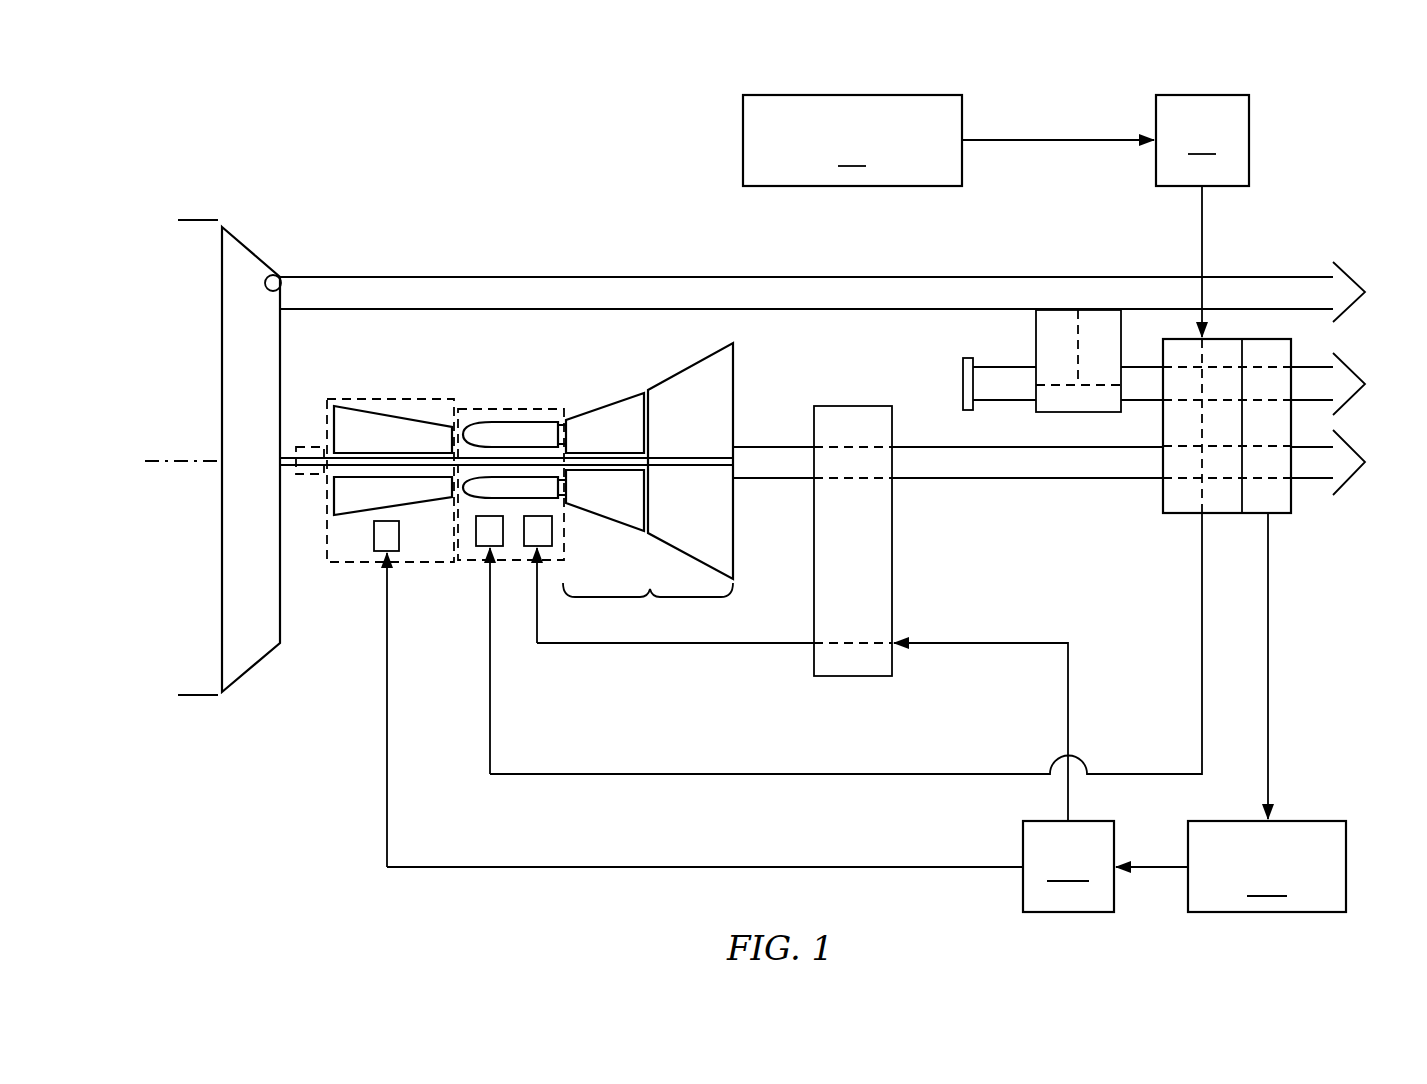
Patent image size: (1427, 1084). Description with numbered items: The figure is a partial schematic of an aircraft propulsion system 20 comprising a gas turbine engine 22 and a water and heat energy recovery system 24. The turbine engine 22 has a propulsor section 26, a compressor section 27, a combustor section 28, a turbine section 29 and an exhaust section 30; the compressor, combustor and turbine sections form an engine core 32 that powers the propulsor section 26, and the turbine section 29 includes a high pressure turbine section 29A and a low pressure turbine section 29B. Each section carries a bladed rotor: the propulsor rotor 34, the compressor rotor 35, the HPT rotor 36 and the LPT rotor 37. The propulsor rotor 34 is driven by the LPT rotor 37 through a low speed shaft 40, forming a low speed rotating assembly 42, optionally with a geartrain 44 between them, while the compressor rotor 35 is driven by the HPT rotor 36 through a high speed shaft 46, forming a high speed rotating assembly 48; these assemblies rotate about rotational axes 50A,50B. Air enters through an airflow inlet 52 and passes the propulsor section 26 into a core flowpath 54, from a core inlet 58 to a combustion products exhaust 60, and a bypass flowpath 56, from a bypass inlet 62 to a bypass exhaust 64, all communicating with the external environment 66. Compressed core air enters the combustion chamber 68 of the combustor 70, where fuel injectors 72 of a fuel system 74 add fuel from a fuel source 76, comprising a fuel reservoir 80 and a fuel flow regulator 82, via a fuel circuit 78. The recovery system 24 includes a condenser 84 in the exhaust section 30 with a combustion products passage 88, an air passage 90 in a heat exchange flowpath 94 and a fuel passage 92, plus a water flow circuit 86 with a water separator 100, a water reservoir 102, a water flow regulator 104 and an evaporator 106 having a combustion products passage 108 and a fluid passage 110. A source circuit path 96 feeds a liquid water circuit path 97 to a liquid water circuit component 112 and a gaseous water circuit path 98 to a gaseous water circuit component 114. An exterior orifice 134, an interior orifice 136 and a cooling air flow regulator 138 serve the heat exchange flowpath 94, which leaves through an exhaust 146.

The aircraft propulsion system 20 is at (244, 101).
The gas turbine engine 22 is at (380, 146).
The water and heat energy recovery system 24 is at (1370, 730).
The propulsor section 26 is at (256, 422).
The compressor section 27 is at (390, 438).
The combustor section 28 is at (511, 418).
The turbine section 29 is at (648, 431).
The high pressure turbine section 29A is at (600, 390).
The low pressure turbine section 29B is at (682, 348).
The exhaust section 30 is at (825, 340).
The engine core 32 is at (480, 322).
The propulsor rotor 34 is at (222, 372).
The compressor rotor 35 is at (342, 412).
The HPT rotor 36 is at (585, 412).
The LPT rotor 37 is at (733, 343).
The low speed shaft 40 is at (628, 458).
The low speed rotating assembly 42 is at (210, 437).
The geartrain 44 is at (298, 445).
The high speed shaft 46 is at (568, 438).
The high speed rotating assembly 48 is at (324, 399).
The rotational axes 50A,50B is at (158, 465).
The airflow inlet 52 is at (170, 268).
The core flowpath 54 is at (935, 480).
The bypass flowpath 56 is at (917, 290).
The core airflow inlet 58 is at (315, 500).
The combustion products exhaust 60 is at (1365, 463).
The bypass airflow inlet 62 is at (283, 273).
The bypass airflow exhaust 64 is at (1365, 290).
The external environment 66 is at (195, 157).
The combustion chamber 68 is at (520, 432).
The combustor 70 is at (490, 420).
The fuel injectors 72 is at (475, 542).
The fuel system 74 is at (1060, 194).
The fuel source 76 is at (1108, 93).
The fuel circuit 78 is at (1236, 207).
The fuel reservoir 80 is at (852, 140).
The fuel flow regulator 82 is at (1202, 140).
The condenser 84 is at (1160, 503).
The water flow circuit 86 is at (760, 898).
The combustion products passage 88 is at (1185, 513).
The air passage 90 is at (1184, 370).
The fuel passage 92 is at (1205, 357).
The heat exchange flowpath 94 is at (1143, 390).
The source circuit path 96 is at (1292, 756).
The liquid water circuit path 97 is at (898, 880).
The gaseous water circuit path 98 is at (1038, 633).
The water separator 100 is at (1292, 512).
The water reservoir 102 is at (1231, 866).
The water flow regulator 104 is at (794, 712).
The evaporator 106 is at (892, 578).
The combustion products passage 108 is at (855, 447).
The fluid passage 110 is at (851, 648).
The liquid water circuit component 112 is at (375, 535).
The gaseous water circuit component 114 is at (550, 535).
The exterior orifice 134 is at (960, 385).
The interior orifice 136 is at (1078, 308).
The cooling air flow regulator 138 is at (1030, 345).
The heat exchange flowpath exhaust 146 is at (1365, 385).